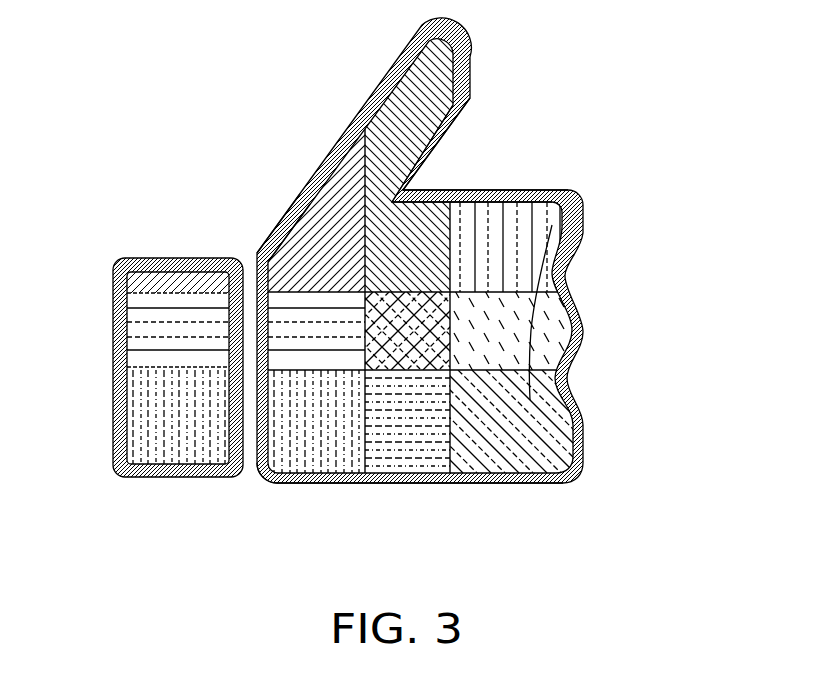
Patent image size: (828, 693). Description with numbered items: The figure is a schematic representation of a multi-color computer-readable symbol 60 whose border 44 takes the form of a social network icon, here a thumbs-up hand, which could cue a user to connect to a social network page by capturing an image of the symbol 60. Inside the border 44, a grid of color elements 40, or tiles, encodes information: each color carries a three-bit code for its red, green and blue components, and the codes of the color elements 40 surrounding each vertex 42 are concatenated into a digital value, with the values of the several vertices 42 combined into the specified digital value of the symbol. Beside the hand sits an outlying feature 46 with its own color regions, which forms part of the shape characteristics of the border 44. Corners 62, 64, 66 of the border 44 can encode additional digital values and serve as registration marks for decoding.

The multi-color computer-readable symbol 60 is at (127, 156).
The color elements 40 is at (533, 310).
The vertices 42 is at (452, 293).
The border 44 is at (507, 188).
The outlying feature 46 is at (155, 478).
The corner 62 is at (247, 262).
The corner 64 is at (260, 478).
The corner 66 is at (433, 183).